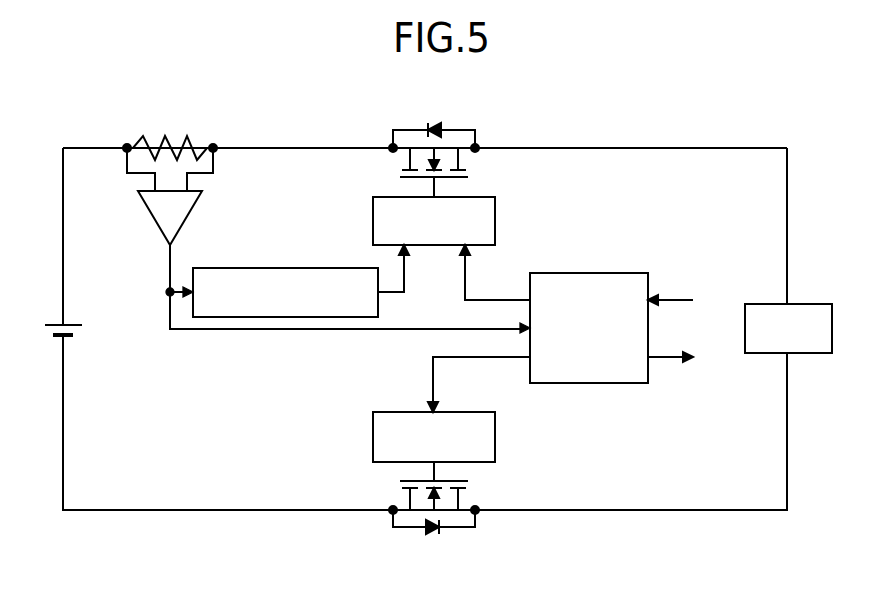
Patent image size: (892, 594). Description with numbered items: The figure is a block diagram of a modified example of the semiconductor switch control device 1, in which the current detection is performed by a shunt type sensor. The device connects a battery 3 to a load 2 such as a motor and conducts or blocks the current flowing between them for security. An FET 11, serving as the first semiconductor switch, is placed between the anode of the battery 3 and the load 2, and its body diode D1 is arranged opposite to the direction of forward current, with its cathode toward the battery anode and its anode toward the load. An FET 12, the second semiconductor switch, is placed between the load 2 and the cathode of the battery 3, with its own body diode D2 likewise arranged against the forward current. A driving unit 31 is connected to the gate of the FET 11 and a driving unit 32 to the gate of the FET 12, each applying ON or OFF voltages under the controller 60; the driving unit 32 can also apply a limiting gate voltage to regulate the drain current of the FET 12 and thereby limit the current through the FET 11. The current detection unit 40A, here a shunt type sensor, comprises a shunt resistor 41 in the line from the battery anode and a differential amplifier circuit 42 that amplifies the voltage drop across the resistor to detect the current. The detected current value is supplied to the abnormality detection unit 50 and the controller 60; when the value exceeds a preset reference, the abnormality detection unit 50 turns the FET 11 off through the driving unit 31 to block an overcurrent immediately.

The semiconductor switch control device 1 is at (575, 114).
The load 2 is at (808, 303).
The battery 3 is at (82, 307).
The FET 11 is at (456, 140).
The FET 12 is at (472, 518).
The driving unit 31 is at (497, 208).
The driving unit 32 is at (497, 423).
The current detection unit 40A is at (184, 163).
The shunt resistor 41 is at (165, 135).
The differential amplifier circuit 42 is at (192, 218).
The abnormality detection unit 50 is at (332, 267).
The controller 60 is at (622, 272).
The body diode D1 is at (439, 121).
The body diode D2 is at (432, 533).